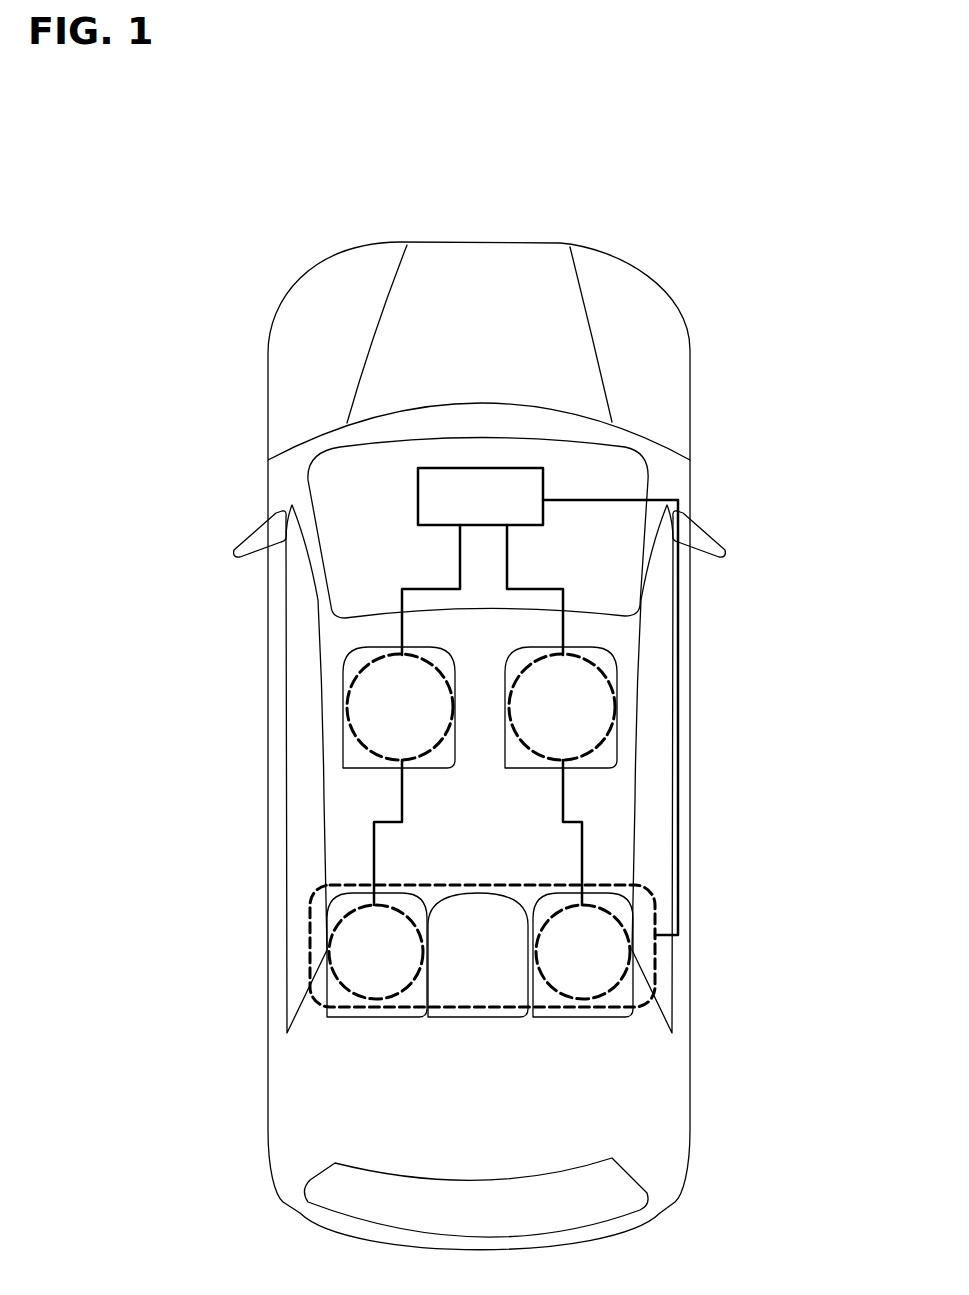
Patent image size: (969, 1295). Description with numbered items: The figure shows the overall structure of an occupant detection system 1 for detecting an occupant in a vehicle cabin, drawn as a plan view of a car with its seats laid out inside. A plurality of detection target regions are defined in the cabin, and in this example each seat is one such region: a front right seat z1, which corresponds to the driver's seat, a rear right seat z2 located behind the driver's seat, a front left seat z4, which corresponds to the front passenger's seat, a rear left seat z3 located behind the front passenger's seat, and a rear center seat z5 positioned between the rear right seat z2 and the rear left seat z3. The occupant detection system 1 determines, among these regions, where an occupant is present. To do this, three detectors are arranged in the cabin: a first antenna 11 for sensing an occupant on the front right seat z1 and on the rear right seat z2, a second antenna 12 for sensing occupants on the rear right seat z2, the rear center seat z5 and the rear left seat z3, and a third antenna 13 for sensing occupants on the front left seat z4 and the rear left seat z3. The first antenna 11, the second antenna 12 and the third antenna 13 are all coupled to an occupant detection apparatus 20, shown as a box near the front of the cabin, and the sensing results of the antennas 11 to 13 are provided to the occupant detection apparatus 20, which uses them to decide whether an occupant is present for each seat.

The occupant detection system 1 is at (752, 237).
The occupant detection apparatus 20 is at (493, 468).
The first antenna 11 is at (533, 585).
The second antenna 12 is at (680, 593).
The third antenna 13 is at (440, 585).
The front right seat z1 is at (608, 770).
The rear right seat z2 is at (568, 1018).
The rear left seat z3 is at (363, 1018).
The front left seat z4 is at (360, 770).
The rear center seat z5 is at (465, 1018).